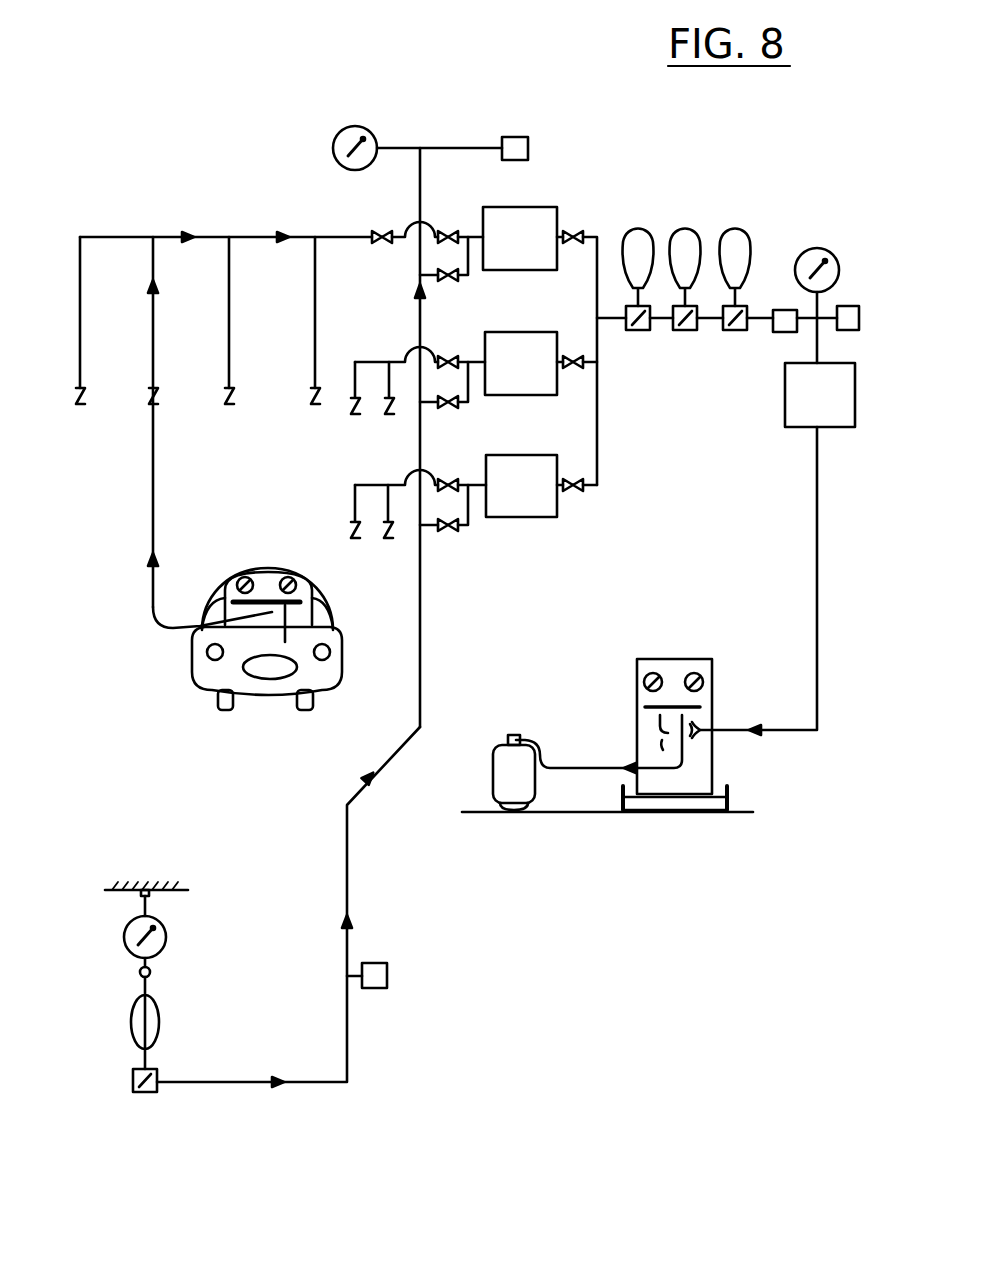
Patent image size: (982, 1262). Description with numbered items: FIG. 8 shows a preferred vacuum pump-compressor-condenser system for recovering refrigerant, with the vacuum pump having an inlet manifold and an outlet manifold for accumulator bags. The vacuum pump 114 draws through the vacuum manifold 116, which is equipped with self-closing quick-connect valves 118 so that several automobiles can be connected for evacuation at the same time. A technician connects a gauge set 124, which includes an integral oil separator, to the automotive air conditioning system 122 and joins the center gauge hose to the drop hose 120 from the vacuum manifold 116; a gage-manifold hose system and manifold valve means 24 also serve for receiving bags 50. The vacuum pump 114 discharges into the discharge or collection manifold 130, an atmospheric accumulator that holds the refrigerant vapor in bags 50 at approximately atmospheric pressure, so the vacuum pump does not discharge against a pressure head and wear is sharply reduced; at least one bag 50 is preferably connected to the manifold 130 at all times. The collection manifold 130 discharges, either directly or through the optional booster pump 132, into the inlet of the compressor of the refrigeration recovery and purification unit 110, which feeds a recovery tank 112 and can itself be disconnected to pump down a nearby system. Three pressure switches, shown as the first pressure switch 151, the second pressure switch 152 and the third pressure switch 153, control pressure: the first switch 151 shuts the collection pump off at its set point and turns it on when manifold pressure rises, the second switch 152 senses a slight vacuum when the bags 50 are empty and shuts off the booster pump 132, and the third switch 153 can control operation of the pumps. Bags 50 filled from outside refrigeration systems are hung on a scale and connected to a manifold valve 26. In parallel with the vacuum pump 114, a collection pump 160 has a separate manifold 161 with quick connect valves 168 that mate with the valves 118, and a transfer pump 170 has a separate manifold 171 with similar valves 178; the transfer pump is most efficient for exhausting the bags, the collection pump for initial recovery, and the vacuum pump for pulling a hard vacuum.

The manifold valve means 24 is at (736, 332).
The manifold valve 26 is at (133, 1080).
The bags 50 is at (650, 267).
The refrigeration recovery and purification unit 110 is at (637, 692).
The refrigerant tank 112 is at (493, 760).
The vacuum pump 114 is at (537, 256).
The vacuum manifold 116 is at (80, 278).
The self-closing quick-connect valves 118 is at (180, 422).
The service hose 120 is at (153, 590).
The automotive air conditioning system 122 is at (342, 650).
The gauge set 124 is at (298, 578).
The discharge manifold 130 is at (655, 346).
The booster pump 132 is at (838, 408).
The pressure switch PSL-1 151 is at (528, 148).
The pressure switch PSL-2 152 is at (850, 306).
The pressure switch PSL-3 153 is at (383, 963).
The collection pump 160 is at (538, 375).
The separate manifold 161 is at (420, 353).
The quick connect valves 168 is at (349, 410).
The transfer pump 170 is at (539, 498).
The separate manifold 171 is at (355, 497).
The valves 178 is at (354, 517).